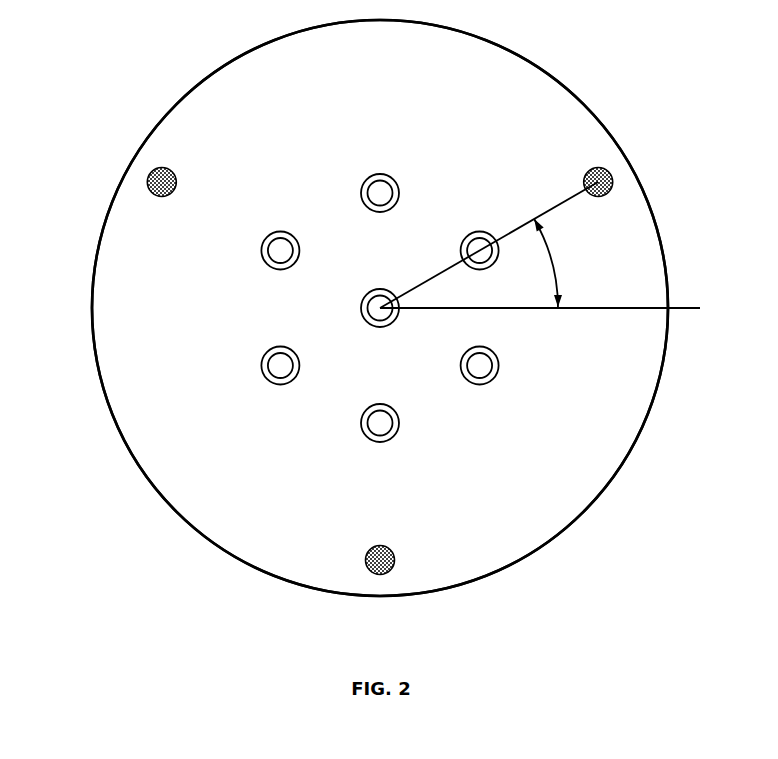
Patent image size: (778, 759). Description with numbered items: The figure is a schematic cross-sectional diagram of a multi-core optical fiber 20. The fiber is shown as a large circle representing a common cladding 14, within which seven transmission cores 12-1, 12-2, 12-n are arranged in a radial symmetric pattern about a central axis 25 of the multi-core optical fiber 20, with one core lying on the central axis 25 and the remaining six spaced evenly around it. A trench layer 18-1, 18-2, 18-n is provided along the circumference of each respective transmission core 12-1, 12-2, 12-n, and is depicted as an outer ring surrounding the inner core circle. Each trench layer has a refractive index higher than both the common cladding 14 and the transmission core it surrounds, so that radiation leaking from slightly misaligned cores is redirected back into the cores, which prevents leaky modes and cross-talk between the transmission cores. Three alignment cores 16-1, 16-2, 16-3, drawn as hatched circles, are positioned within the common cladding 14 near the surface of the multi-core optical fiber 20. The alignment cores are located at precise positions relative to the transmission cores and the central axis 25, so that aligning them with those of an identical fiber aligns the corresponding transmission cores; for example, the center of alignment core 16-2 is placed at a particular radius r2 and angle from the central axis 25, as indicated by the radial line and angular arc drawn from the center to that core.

The multi-core optical fiber 20 is at (148, 72).
The common cladding 14 is at (622, 235).
The central axis 25 is at (377, 298).
The trench layer 18-1 is at (262, 367).
The trench layer 18-2 is at (368, 442).
The trench layer 18-n is at (500, 368).
The transmission core 12-1 is at (273, 372).
The transmission core 12-2 is at (375, 430).
The transmission core 12-n is at (488, 370).
The alignment core 16-1 is at (147, 183).
The alignment core 16-2 is at (602, 167).
The alignment core 16-3 is at (393, 572).
The radius r2 is at (489, 244).